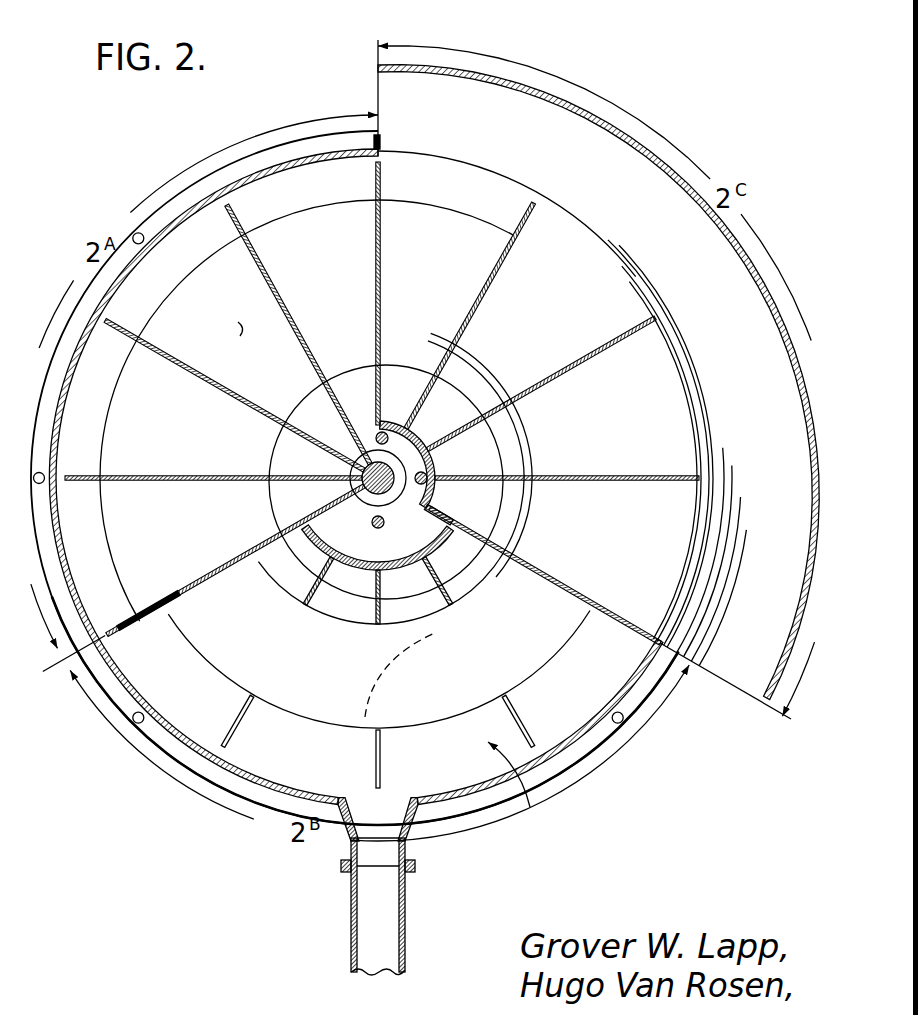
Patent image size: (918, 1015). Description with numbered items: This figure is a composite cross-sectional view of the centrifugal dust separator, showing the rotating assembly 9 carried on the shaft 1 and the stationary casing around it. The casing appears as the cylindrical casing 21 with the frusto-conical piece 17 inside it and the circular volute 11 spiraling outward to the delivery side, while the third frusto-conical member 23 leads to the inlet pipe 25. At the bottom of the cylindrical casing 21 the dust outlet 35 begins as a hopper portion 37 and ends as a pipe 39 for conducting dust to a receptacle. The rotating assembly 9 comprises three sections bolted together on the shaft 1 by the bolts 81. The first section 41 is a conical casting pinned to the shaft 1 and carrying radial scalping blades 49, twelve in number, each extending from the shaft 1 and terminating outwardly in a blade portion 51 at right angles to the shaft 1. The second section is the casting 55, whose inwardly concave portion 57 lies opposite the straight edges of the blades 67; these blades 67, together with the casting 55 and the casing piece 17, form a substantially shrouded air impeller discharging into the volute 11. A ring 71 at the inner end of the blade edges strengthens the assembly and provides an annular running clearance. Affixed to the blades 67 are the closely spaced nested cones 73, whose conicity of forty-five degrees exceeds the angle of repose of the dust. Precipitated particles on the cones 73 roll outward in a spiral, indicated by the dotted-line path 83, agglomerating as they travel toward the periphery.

The shaft 1 is at (363, 490).
The rotating assembly 9 is at (519, 786).
The circular volute 11 is at (394, 97).
The frusto-conical piece 17 is at (570, 243).
The cylindrical casing 21 is at (200, 205).
The third frusto-conical member 23 is at (227, 321).
The inlet pipe 25 is at (312, 420).
The dust outlet 35 is at (367, 883).
The hopper portion 37 is at (390, 823).
The pipe 39 is at (387, 922).
The first section 41 is at (300, 568).
The scalping blades 49 is at (377, 307).
The blade portion 51 is at (120, 318).
The casting 55 is at (340, 562).
The inwardly concave portion 57 is at (433, 458).
The blades 67 is at (380, 218).
The ring 71 is at (483, 368).
The nested cones 73 is at (215, 650).
The bolts 81 is at (393, 437).
The dotted-line path 83 is at (397, 657).